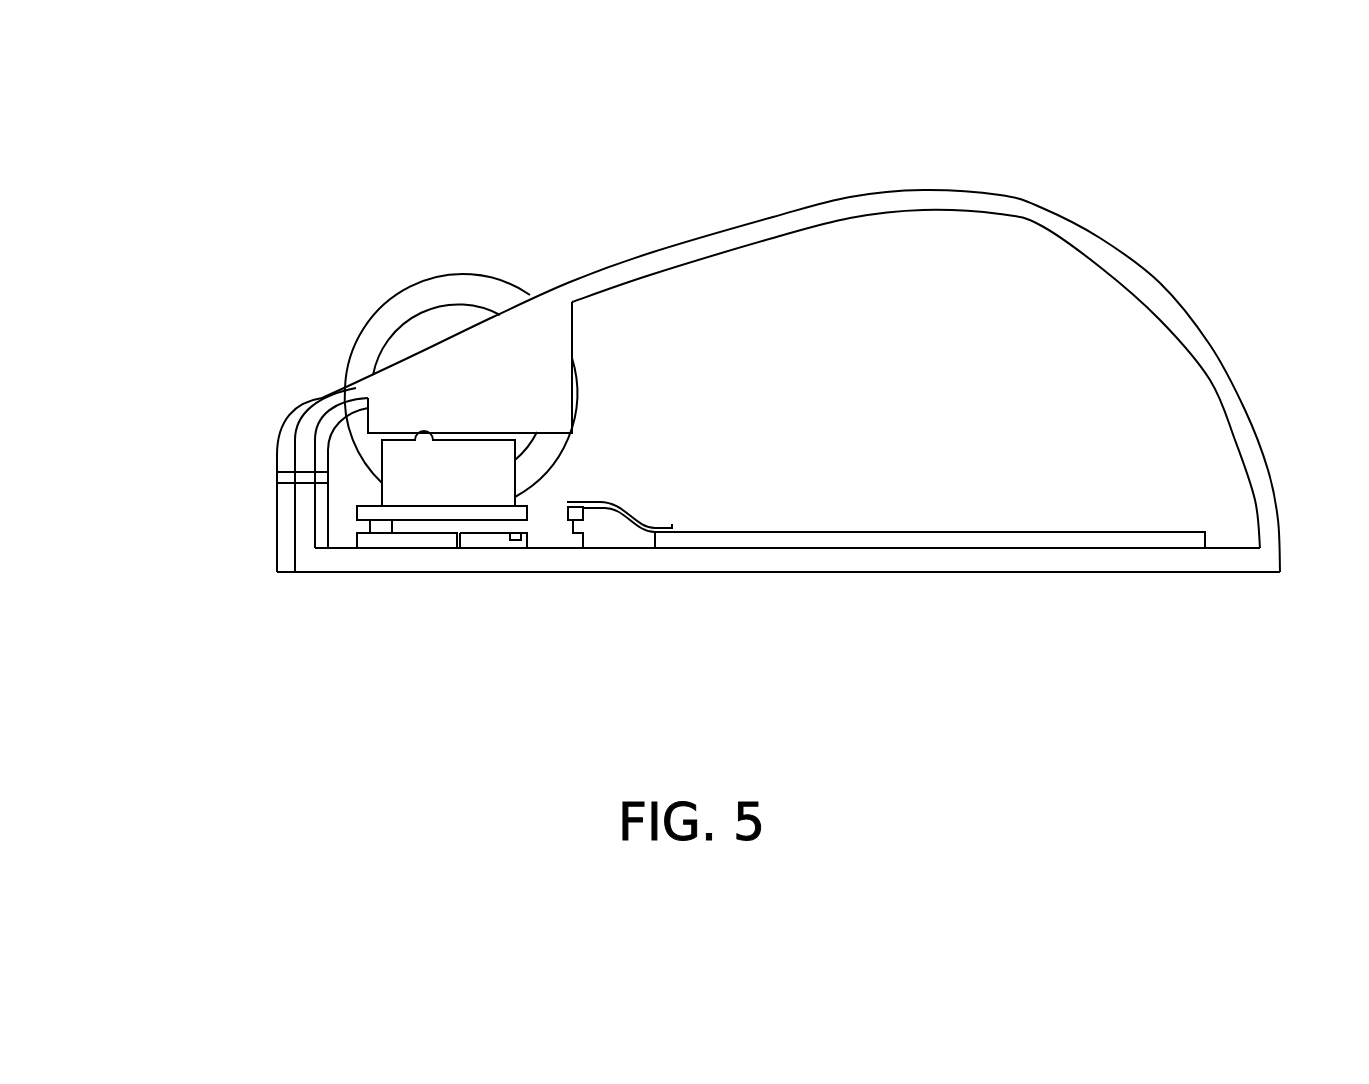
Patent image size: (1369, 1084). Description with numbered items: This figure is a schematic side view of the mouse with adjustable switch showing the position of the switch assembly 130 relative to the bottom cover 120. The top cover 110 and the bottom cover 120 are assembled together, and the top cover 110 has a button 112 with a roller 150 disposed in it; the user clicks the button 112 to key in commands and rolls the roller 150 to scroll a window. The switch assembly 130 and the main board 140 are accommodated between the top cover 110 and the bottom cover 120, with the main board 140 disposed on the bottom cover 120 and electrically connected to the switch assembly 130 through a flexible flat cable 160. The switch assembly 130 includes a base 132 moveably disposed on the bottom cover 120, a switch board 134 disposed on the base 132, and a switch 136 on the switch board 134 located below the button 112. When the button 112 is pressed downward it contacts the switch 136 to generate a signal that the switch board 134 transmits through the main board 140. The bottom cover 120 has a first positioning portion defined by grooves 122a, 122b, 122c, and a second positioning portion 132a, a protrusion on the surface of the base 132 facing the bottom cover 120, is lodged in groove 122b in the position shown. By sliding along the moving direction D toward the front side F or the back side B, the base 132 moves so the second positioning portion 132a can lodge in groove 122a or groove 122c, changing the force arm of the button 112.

The top cover 110 is at (1043, 227).
The button 112 is at (547, 323).
The bottom cover 120 is at (1220, 562).
The groove 122a is at (417, 552).
The groove 122b is at (449, 556).
The groove 122c is at (486, 556).
The switch assembly 130 is at (536, 572).
The base 132 is at (570, 538).
The second positioning portion 132a is at (474, 568).
The switch board 134 is at (513, 512).
The switch 136 is at (487, 490).
The main board 140 is at (1135, 542).
The roller 150 is at (428, 297).
The flexible flat cable 160 is at (670, 530).
The front side F is at (259, 506).
The moving direction D is at (216, 569).
The back side B is at (1282, 458).